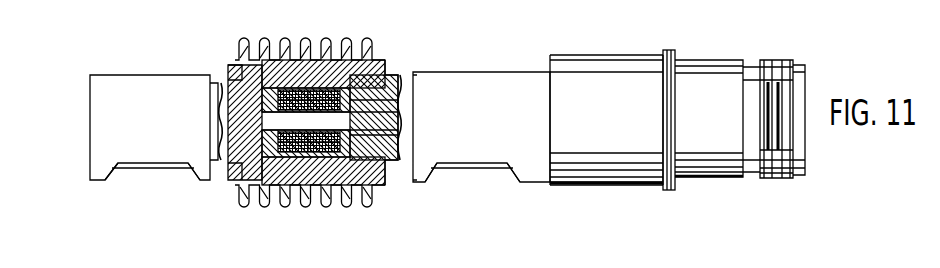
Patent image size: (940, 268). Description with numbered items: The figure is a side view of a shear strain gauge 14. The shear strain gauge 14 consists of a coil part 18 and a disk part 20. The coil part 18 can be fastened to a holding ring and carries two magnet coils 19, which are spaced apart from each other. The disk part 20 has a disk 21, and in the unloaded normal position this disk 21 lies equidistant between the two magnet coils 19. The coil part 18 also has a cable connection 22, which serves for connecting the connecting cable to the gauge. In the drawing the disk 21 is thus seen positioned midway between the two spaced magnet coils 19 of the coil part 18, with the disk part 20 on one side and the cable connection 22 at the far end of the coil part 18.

The shear strain gauge 14 is at (465, 60).
The coil part 18 is at (386, 138).
The magnet coils 19 is at (337, 90).
The disk part 20 is at (237, 118).
The disk 21 is at (310, 112).
The cable connection 22 is at (805, 158).